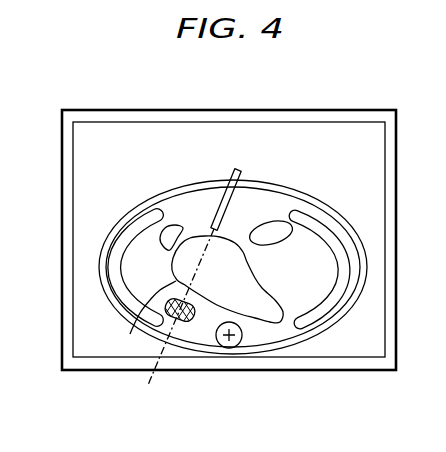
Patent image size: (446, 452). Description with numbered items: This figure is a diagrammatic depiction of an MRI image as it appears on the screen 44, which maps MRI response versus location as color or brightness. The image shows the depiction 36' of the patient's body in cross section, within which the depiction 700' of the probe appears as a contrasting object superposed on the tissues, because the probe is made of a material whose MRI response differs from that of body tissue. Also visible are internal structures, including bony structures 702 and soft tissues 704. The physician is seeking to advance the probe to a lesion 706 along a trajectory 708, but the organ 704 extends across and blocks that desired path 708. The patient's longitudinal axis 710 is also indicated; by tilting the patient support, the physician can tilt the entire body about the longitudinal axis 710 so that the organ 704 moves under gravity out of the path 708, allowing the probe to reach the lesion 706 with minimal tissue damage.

The screen 44 is at (264, 110).
The depiction of the patient 36' is at (227, 258).
The depiction of the probe 700' is at (194, 263).
The bony structures 702 is at (132, 231).
The soft tissues 704 is at (222, 250).
The lesion 706 is at (186, 322).
The trajectory 708 is at (145, 326).
The longitudinal axis 710 is at (235, 340).